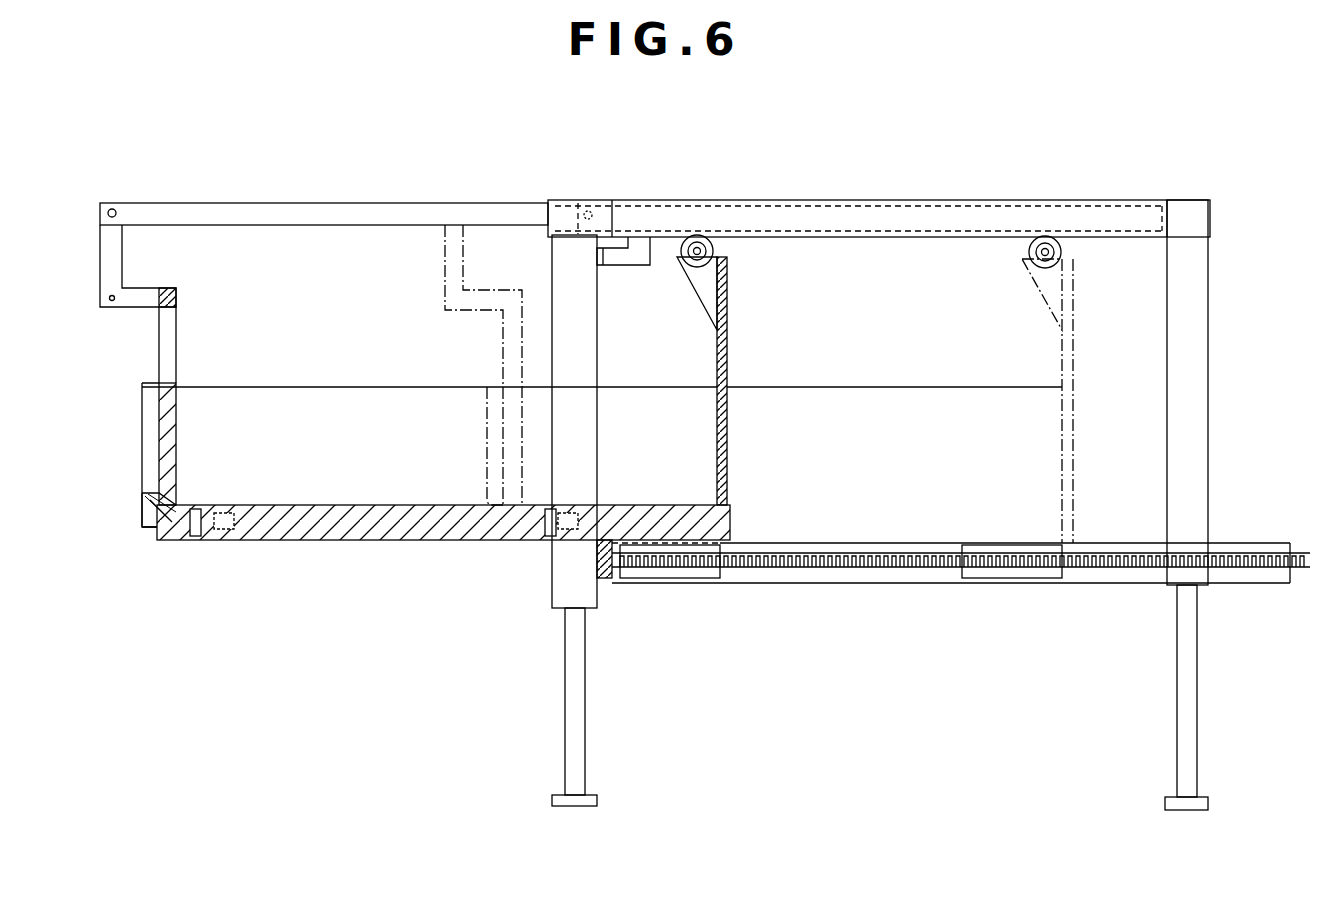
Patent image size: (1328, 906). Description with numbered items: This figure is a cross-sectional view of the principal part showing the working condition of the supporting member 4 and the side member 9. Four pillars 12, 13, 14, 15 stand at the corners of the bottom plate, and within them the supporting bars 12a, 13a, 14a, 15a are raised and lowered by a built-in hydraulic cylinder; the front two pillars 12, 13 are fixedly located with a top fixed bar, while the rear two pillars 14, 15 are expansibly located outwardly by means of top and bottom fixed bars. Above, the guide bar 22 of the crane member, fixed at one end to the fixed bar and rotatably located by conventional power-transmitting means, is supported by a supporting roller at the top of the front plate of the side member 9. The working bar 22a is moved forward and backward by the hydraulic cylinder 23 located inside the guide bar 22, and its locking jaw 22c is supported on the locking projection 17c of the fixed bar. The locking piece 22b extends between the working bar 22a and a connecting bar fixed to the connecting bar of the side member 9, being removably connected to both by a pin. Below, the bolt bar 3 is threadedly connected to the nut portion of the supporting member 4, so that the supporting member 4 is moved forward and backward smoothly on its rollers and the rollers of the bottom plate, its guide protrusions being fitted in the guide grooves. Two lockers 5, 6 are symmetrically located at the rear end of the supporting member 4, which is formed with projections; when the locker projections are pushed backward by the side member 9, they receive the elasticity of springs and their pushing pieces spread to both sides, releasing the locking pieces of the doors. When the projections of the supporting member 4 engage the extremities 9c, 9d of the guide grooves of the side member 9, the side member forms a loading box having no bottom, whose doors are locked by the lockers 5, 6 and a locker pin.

The bolt bar 3 is at (1112, 567).
The supporting member 4 is at (300, 540).
The locker 5 is at (121, 510).
The locker 6 is at (145, 510).
The side member 9 is at (195, 430).
The extremity of guide groove 9c is at (160, 352).
The extremity of guide groove 9d is at (137, 300).
The pillar 12 is at (1234, 392).
The pillar 13 is at (1208, 415).
The supporting bar 12a is at (1238, 697).
The supporting bar 13a is at (1188, 730).
The pillar 14 is at (538, 438).
The pillar 15 is at (565, 578).
The supporting bar 14a is at (644, 707).
The supporting bar 15a is at (580, 727).
The locking projection 17c is at (610, 240).
The guide bar 22 is at (655, 200).
The working bar 22a is at (320, 203).
The locking piece 22b is at (110, 248).
The locking jaw 22c is at (640, 252).
The hydraulic cylinder 23 is at (955, 205).